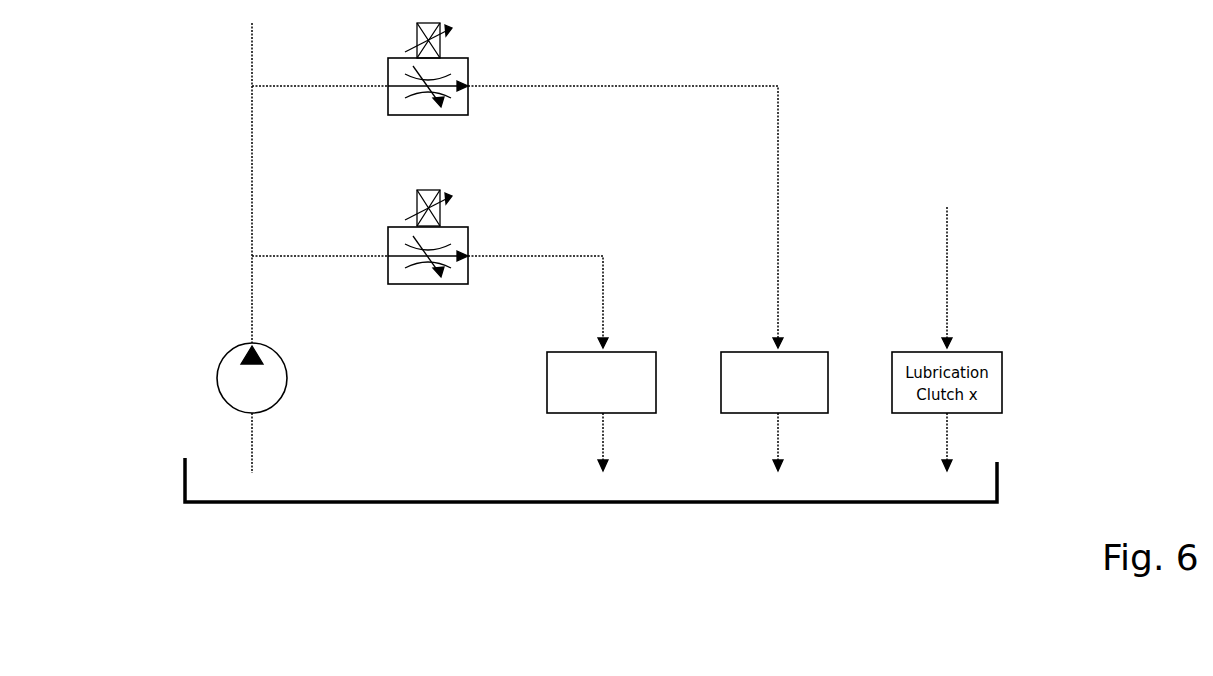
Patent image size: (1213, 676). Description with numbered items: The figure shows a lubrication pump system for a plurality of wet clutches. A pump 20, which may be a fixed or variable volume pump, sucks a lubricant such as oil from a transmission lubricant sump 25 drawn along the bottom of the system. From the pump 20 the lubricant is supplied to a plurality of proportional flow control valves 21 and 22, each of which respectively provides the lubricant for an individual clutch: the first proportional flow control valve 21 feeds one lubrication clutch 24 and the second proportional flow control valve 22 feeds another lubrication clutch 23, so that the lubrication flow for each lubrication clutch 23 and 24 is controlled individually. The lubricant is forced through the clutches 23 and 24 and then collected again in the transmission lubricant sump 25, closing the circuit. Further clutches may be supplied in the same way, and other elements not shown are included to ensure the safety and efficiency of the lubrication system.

The pump 20 is at (228, 384).
The proportional flow control valve 21 is at (396, 70).
The proportional flow control valve 22 is at (392, 240).
The lubrication clutch 23 is at (555, 388).
The lubrication clutch 24 is at (727, 376).
The transmission lubricant sump 25 is at (512, 505).